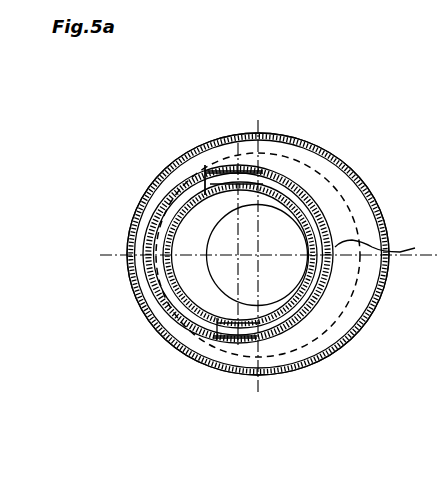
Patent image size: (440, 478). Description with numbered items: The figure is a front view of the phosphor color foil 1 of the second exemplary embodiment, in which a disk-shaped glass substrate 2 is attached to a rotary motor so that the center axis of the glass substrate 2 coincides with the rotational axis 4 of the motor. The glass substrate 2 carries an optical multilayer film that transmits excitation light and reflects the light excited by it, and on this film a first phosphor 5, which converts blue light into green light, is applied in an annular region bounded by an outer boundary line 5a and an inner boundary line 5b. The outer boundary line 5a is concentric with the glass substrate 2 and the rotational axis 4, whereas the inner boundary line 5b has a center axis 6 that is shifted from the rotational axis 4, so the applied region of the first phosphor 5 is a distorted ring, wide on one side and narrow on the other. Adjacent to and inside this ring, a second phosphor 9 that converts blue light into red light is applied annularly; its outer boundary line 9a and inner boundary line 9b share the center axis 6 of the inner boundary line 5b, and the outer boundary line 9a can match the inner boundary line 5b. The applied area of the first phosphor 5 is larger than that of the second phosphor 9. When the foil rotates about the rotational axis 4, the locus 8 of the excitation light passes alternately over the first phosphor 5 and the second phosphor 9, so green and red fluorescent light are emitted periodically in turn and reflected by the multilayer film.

The phosphor color foil 1 is at (118, 183).
The glass substrate 2 is at (206, 195).
The rotational axis 4 is at (260, 258).
The phosphor (first phosphor) 5 is at (318, 167).
The outer boundary line 5a is at (351, 212).
The inner boundary line 5b is at (383, 246).
The center axis 6 is at (238, 256).
The locus 8 is at (373, 190).
The phosphor (second phosphor) 9 is at (250, 266).
The outer boundary line 9a is at (318, 312).
The inner boundary line 9b is at (302, 320).